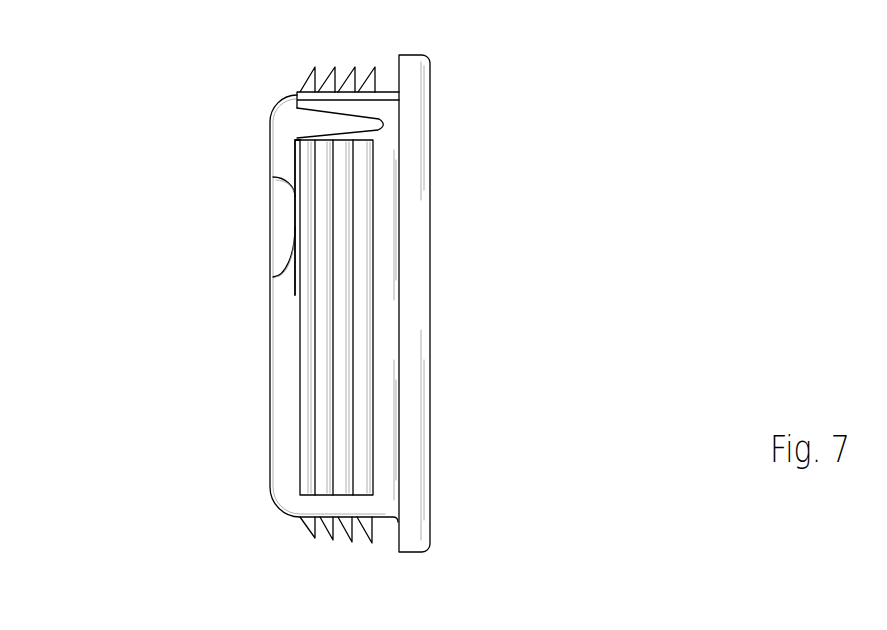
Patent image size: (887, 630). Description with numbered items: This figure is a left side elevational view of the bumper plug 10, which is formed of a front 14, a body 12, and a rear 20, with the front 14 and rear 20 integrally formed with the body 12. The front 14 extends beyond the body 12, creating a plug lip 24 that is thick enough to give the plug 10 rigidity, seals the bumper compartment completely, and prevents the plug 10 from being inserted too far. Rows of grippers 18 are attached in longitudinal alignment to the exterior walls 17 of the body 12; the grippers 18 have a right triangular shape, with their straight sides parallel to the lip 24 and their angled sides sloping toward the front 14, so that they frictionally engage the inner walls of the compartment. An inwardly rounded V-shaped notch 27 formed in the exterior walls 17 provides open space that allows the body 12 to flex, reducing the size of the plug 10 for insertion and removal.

The bumper plug 10 is at (49, 172).
The body 12 is at (279, 198).
The front 14 is at (431, 180).
The exterior walls 17 is at (384, 227).
The grippers 18 is at (335, 66).
The rear 20 is at (270, 480).
The plug lip 24 is at (399, 68).
The V-shaped notch 27 is at (385, 125).